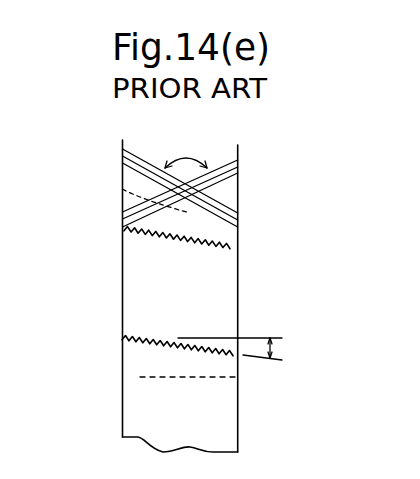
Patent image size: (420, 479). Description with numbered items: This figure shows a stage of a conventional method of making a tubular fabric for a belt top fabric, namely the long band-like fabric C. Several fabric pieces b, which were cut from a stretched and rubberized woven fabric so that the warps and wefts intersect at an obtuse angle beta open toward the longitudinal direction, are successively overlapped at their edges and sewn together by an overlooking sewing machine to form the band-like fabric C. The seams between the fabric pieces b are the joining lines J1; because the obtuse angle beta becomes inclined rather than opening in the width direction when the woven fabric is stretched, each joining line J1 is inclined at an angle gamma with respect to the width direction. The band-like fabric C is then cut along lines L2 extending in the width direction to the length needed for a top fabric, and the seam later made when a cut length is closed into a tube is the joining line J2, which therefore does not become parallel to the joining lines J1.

The band-like fabric C is at (122, 181).
The cutting lines L2 is at (122, 189).
The fabric pieces b is at (232, 186).
The joining lines of the fabric pieces J1 is at (147, 337).
The joining lines of the tubular fabric J2 is at (140, 377).
The obtuse angle beta is at (186, 145).
The angle of inclination gamma is at (240, 355).